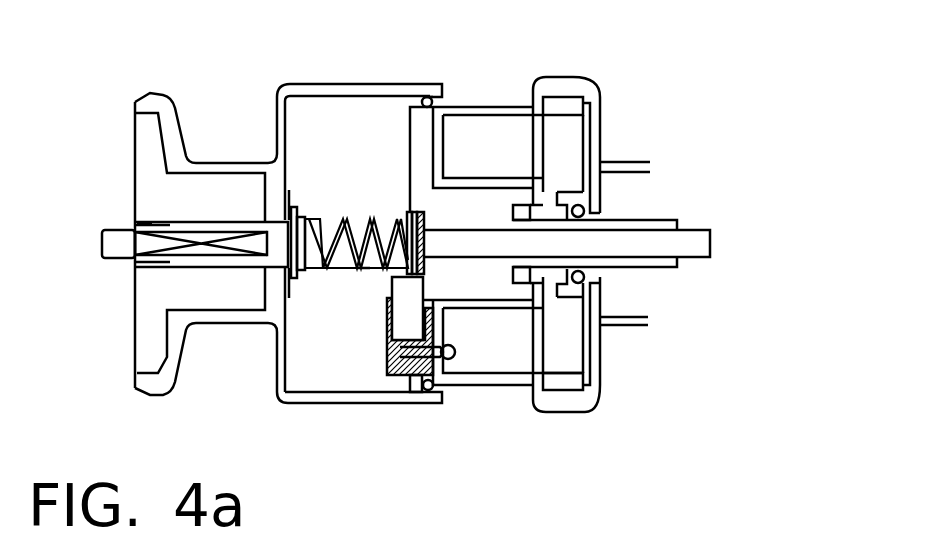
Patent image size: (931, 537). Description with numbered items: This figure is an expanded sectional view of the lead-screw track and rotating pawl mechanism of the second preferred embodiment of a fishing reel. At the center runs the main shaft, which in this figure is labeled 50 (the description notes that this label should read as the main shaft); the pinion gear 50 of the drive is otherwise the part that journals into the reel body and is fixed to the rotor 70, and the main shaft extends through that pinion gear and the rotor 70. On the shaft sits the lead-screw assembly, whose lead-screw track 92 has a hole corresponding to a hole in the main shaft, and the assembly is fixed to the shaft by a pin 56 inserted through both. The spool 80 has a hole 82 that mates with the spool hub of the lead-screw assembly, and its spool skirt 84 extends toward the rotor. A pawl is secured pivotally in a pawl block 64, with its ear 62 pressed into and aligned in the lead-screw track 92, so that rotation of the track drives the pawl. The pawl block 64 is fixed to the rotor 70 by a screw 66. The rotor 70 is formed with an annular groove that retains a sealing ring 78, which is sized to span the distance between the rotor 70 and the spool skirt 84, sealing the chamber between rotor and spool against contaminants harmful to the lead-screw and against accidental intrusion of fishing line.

The pinion gear 50 is at (687, 243).
The pin 56 is at (312, 243).
The ear 62 is at (392, 222).
The pawl block 64 is at (397, 367).
The screw 66 is at (455, 352).
The rotor 70 is at (558, 90).
The sealing ring 78 is at (428, 392).
The spool 80 is at (207, 163).
The hole 82 is at (133, 222).
The spool skirt 84 is at (373, 92).
The lead-screw track 92 is at (363, 262).